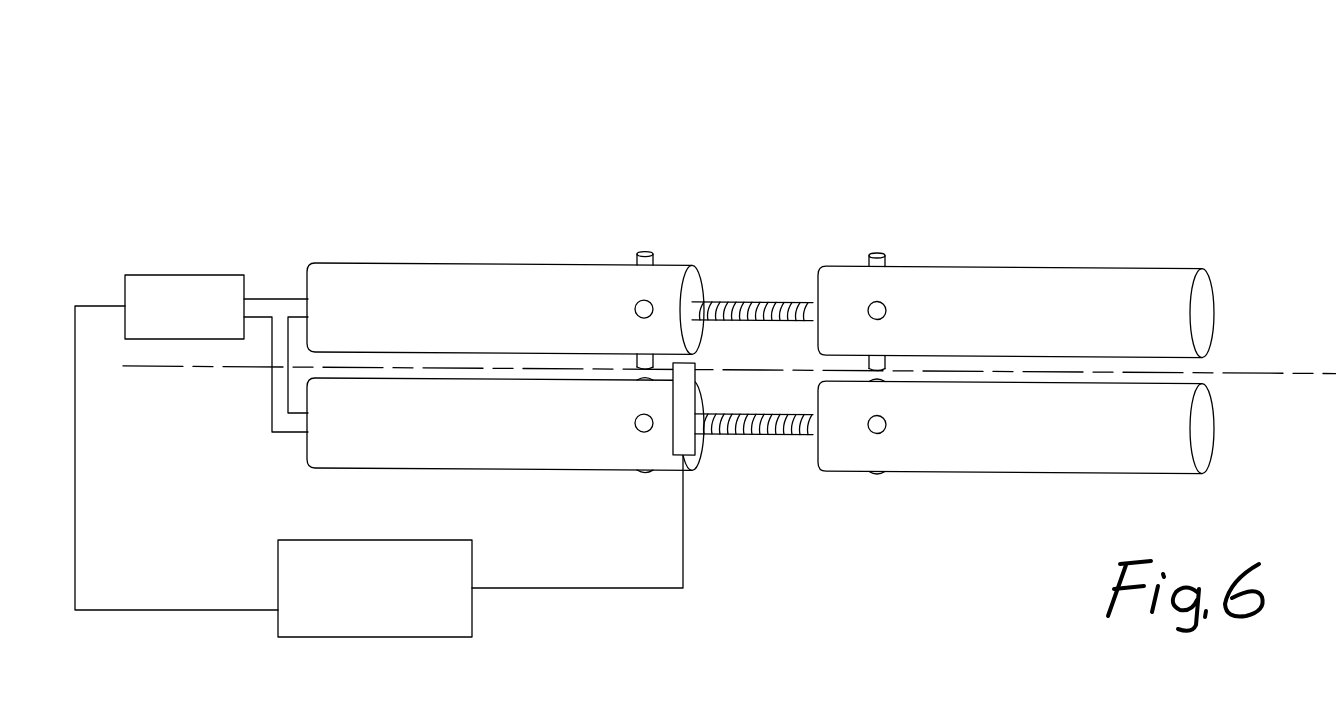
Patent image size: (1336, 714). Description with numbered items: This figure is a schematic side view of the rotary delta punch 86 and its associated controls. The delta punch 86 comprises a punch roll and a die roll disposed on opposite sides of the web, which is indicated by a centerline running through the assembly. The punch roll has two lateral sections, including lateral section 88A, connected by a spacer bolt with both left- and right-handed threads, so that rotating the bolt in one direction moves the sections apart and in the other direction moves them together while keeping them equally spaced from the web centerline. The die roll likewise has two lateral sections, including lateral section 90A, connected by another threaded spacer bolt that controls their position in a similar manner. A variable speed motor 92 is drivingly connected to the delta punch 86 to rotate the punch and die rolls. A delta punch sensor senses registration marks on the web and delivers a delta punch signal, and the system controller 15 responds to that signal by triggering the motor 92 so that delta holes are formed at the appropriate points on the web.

The system controller 15 is at (298, 560).
The delta punch 86 is at (505, 165).
The lateral section 88A is at (675, 285).
The lateral section 90A is at (662, 447).
The variable speed motor 92 is at (197, 295).